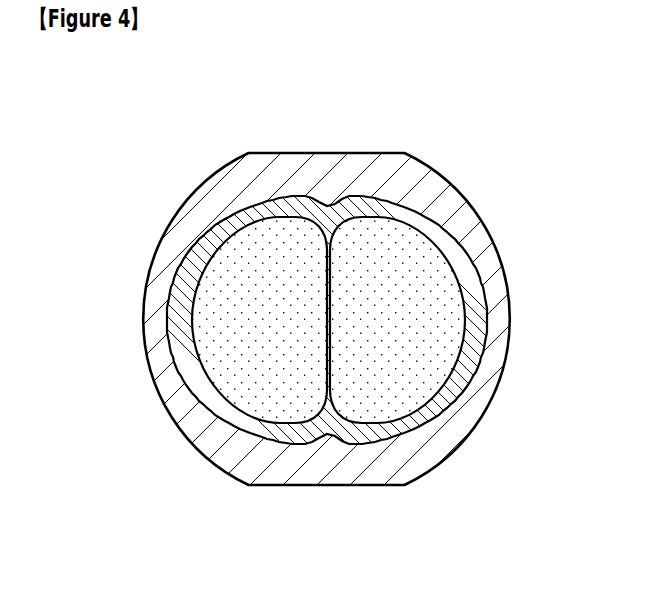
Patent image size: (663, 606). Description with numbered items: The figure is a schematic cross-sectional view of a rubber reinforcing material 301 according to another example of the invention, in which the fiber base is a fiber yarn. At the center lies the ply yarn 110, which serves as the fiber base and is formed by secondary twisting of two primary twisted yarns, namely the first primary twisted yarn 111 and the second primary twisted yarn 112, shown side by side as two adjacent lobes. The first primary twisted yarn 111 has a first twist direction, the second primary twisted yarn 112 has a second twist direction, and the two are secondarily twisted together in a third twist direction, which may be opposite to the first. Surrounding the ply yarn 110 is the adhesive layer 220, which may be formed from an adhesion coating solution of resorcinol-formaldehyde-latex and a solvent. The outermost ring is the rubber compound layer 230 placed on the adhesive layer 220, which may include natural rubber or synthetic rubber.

The rubber reinforcing material 301 is at (331, 303).
The rubber compound layer 230 is at (477, 403).
The adhesive layer 220 is at (483, 314).
The ply yarn 110 is at (328, 411).
The primary twisted yarn 1 111 is at (280, 367).
The primary twisted yarn 2 112 is at (378, 363).